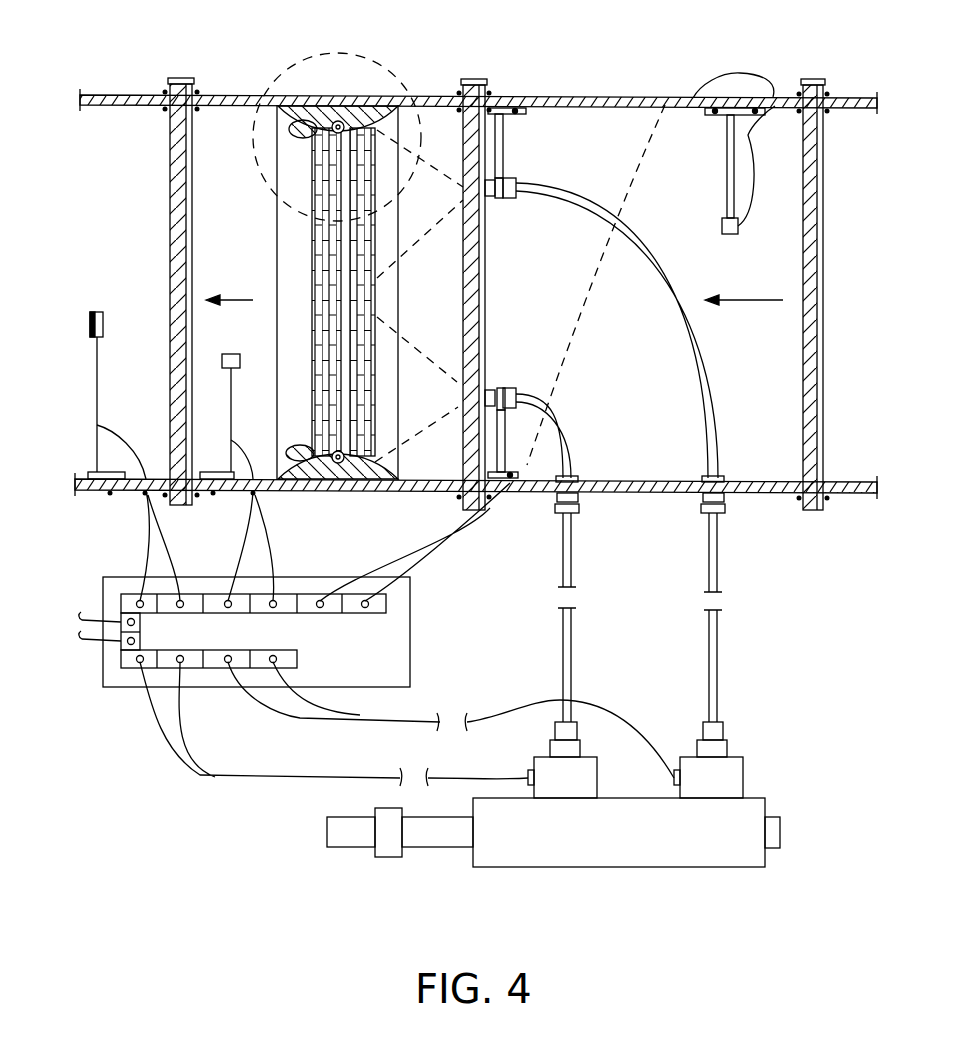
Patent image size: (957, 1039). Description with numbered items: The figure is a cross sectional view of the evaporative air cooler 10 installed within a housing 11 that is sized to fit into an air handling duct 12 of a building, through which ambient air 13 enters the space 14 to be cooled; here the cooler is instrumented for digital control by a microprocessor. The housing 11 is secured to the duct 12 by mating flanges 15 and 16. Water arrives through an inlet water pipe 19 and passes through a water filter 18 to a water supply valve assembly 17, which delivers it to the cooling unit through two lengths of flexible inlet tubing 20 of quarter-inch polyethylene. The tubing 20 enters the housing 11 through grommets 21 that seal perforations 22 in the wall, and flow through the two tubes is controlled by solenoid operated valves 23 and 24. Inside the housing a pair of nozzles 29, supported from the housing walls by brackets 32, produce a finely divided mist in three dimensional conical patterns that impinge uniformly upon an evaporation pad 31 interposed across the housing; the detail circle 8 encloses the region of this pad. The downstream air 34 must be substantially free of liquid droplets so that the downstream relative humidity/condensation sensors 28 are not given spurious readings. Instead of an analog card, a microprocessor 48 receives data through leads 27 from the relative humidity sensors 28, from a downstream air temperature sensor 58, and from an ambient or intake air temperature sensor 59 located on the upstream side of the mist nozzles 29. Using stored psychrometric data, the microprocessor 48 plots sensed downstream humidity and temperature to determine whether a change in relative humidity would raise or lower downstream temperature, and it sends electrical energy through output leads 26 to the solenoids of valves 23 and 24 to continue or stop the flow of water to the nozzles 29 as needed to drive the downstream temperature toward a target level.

The detail circle of fabric roll 8 is at (363, 55).
The evaporative air cooler 10 is at (536, 80).
The housing 11 is at (246, 93).
The air handling duct 12 is at (150, 93).
The ambient air 13 is at (745, 300).
The space 14 is at (234, 244).
The mating flange 15 is at (192, 242).
The mating flange 16 is at (168, 210).
The water supply valve assembly 17 is at (650, 855).
The water filter 18 is at (392, 855).
The inlet water pipe 19 is at (355, 842).
The flexible inlet tubing 20 is at (710, 568).
The grommet 21 is at (580, 478).
The perforation 22 is at (688, 505).
The solenoid operated valve 23 is at (733, 778).
The solenoid operated valve 24 is at (585, 778).
The output lead 26 is at (390, 716).
The lead 27 is at (148, 500).
The relative humidity/condensation sensor 28 is at (103, 325).
The nozzle 29 is at (520, 291).
The evaporation pad 31 is at (358, 229).
The bracket 32 is at (545, 440).
The downstream air 34 is at (233, 300).
The microprocessor 48 is at (395, 646).
The downstream air temperature sensor 58 is at (230, 354).
The ambient or intake air temperature sensor 59 is at (740, 232).